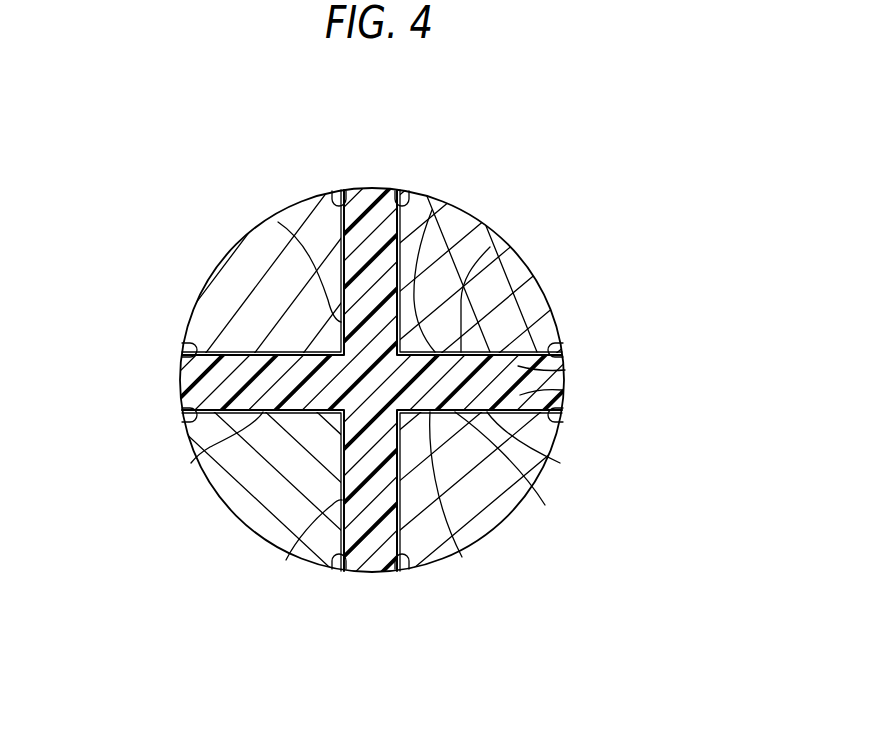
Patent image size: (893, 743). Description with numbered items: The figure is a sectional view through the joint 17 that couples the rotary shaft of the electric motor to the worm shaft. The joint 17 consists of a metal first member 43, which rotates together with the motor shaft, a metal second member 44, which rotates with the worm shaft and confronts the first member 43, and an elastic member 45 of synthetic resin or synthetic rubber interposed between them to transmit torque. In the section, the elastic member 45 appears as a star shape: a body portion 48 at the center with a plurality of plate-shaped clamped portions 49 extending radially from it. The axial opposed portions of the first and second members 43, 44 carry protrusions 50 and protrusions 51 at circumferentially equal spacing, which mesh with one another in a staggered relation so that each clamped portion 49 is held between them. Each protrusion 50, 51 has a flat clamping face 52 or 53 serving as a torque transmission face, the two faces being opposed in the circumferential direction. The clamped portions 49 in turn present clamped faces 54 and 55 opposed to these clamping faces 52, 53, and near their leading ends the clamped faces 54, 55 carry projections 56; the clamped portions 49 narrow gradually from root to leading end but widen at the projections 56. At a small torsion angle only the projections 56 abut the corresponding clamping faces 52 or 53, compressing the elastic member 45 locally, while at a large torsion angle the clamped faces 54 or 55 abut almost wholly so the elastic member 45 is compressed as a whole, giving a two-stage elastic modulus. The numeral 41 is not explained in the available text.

The joint 17 is at (120, 220).
The lower-left sector element 41 is at (232, 490).
The first member 43 is at (201, 275).
The second member 44 is at (530, 250).
The elastic member 45 is at (372, 188).
The body portion 48 is at (462, 557).
The clamped portions 49 is at (490, 247).
The protrusions 50 is at (212, 313).
The protrusions 51 is at (547, 305).
The clamping faces 52 is at (278, 222).
The clamping faces 53 is at (403, 278).
The clamped faces 54 is at (312, 218).
The clamped faces 55 is at (432, 210).
The projections 56 is at (337, 193).